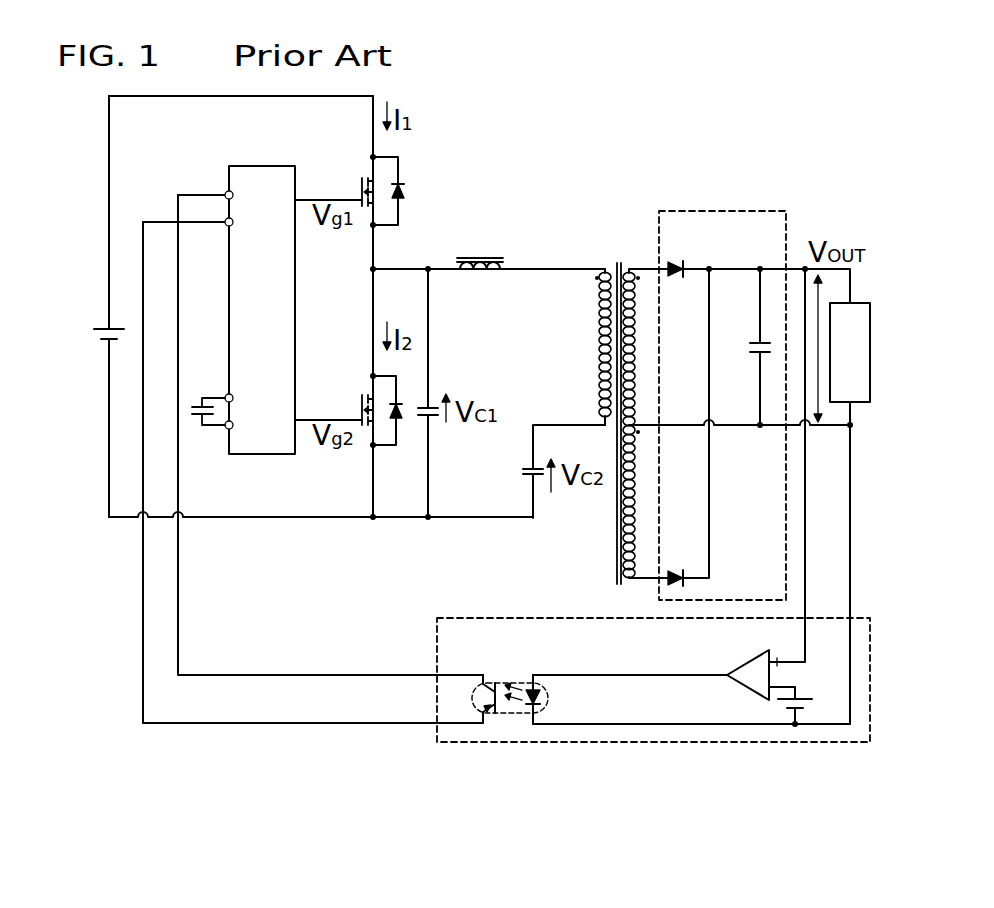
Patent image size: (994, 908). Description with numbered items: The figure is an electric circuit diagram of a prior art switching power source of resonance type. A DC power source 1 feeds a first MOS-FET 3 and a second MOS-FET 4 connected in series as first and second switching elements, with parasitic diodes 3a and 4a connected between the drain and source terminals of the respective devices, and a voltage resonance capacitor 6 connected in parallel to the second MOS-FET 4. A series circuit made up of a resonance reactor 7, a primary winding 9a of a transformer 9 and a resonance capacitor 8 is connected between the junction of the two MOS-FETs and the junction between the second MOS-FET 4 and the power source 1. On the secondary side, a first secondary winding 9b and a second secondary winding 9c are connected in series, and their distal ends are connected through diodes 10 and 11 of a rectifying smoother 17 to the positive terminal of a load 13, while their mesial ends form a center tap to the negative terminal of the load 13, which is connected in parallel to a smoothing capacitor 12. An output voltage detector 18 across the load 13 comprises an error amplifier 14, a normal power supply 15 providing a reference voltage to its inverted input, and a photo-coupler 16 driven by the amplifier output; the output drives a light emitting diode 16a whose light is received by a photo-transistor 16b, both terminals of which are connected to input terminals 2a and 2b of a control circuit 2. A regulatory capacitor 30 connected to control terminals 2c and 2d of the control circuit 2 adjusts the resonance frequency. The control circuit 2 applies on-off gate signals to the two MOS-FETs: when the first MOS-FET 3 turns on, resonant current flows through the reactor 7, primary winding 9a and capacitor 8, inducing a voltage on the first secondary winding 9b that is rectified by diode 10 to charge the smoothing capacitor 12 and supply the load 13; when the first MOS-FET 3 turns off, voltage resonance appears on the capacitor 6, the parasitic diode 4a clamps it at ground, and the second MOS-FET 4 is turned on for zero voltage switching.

The DC power source 1 is at (106, 323).
The control circuit 2 is at (258, 168).
The input terminal of control circuit 2a is at (226, 194).
The input terminal of control circuit 2b is at (226, 226).
The control terminal of control circuit 2c is at (226, 428).
The control terminal of control circuit 2d is at (232, 432).
The regulatory capacitor 30 is at (202, 397).
The first MOS-FET 3 is at (362, 193).
The parasitic diode 3a is at (402, 192).
The second MOS-FET 4 is at (362, 417).
The parasitic diode 4a is at (396, 422).
The voltage resonance capacitor 6 is at (431, 420).
The resonance reactor 7 is at (482, 256).
The resonance capacitor 8 is at (523, 470).
The transformer 9 is at (610, 260).
The primary winding 9a is at (600, 376).
The first secondary winding 9b is at (628, 265).
The second secondary winding 9c is at (626, 581).
The rectifying diode 10 is at (678, 262).
The diode 11 is at (678, 576).
The smoothing capacitor 12 is at (755, 343).
The load 13 is at (868, 307).
The error amplifier 14 is at (749, 660).
The normal power supply 15 is at (804, 700).
The photo-coupler 16 is at (486, 750).
The light emitting diode 16a is at (548, 699).
The photo-transistor 16b is at (517, 667).
The rectifying smoother 17 is at (698, 211).
The output voltage detector 18 is at (506, 618).